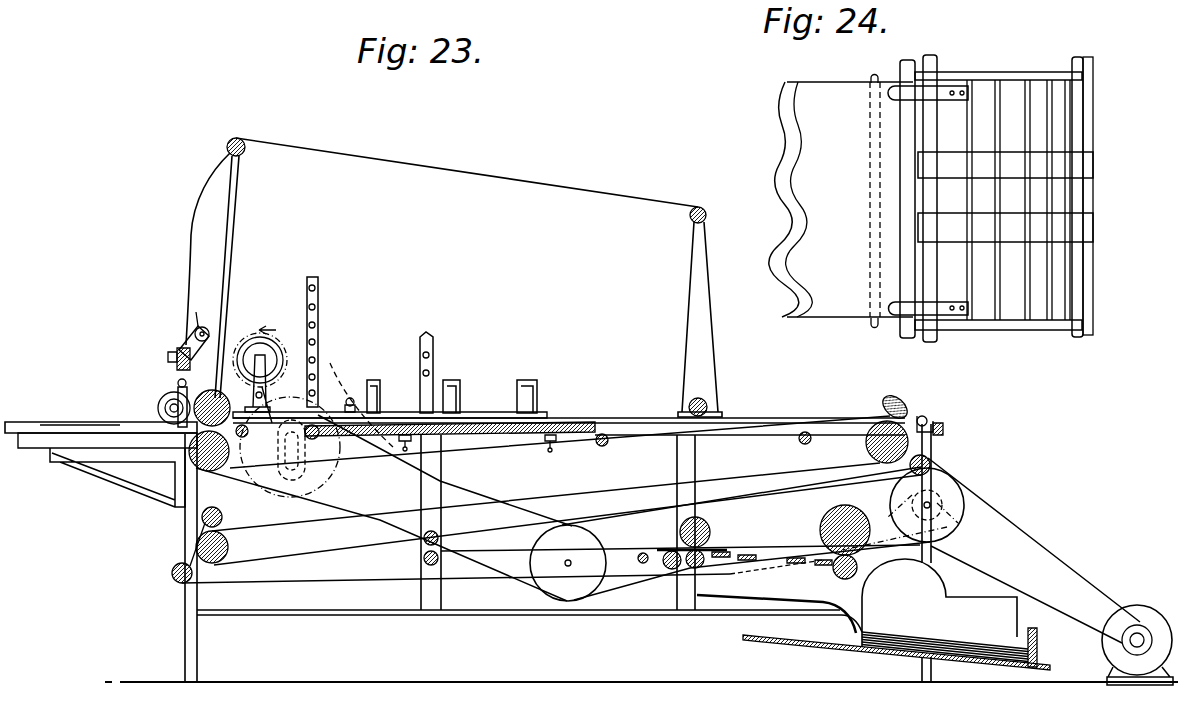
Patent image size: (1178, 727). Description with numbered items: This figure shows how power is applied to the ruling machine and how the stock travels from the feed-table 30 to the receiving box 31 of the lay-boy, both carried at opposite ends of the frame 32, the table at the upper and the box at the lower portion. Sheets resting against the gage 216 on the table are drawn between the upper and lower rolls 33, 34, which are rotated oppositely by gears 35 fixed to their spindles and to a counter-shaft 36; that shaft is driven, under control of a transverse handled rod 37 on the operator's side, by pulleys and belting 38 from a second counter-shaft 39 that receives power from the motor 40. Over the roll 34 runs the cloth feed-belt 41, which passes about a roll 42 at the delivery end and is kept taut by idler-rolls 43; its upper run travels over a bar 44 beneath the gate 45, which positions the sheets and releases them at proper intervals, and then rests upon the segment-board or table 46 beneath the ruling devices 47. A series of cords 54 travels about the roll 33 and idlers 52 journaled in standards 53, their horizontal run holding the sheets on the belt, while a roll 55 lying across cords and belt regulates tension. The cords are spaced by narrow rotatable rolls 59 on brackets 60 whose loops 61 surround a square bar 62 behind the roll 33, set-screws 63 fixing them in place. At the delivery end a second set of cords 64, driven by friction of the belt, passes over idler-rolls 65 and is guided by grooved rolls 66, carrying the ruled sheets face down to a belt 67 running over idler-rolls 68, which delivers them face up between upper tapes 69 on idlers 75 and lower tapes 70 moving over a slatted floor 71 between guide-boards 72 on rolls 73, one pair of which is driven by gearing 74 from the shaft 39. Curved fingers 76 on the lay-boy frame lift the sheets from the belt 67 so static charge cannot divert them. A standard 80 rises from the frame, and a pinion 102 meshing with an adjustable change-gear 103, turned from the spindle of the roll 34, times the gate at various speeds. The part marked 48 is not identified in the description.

In FIG. 23, the feed-table 30 is at (41, 428).
In FIG. 23, the gage 216 is at (90, 430).
In FIG. 23, the receiving box 31 is at (945, 610).
In FIG. 23, the frame 32 is at (452, 614).
In FIG. 23, the upper roll 33 is at (195, 398).
In FIG. 23, the lower roll 34 is at (207, 471).
In FIG. 23, the gears 35 is at (177, 472).
In FIG. 23, the counter-shaft 36 is at (158, 405).
In FIG. 23, the transverse handled rod 37 is at (178, 384).
In FIG. 23, the pulleys and belting 38 is at (567, 525).
In FIG. 23, the second counter-shaft 39 is at (935, 504).
In FIG. 23, the motor 40 is at (1135, 605).
In FIG. 23, the feed-belt 41 is at (413, 445).
In FIG. 24, the feed-belt 41 is at (803, 310).
In FIG. 23, the roll 42 is at (874, 428).
In FIG. 23, the idler-rolls 43 is at (246, 436).
In FIG. 23, the bar 44 is at (218, 404).
In FIG. 23, the gate 45 is at (268, 395).
In FIG. 23, the segment-board or table 46 is at (528, 442).
In FIG. 23, the ruling devices 47 is at (372, 380).
In FIG. 23, the hanger rod 48 is at (377, 456).
In FIG. 23, the idlers 52 is at (246, 153).
In FIG. 23, the standards 53 is at (222, 309).
In FIG. 23, the cords 54 is at (480, 175).
In FIG. 23, the roll 55 is at (338, 397).
In FIG. 23, the narrow rotatable rolls 59 is at (193, 300).
In FIG. 23, the brackets 60 is at (198, 322).
In FIG. 23, the loops 61 is at (178, 348).
In FIG. 23, the bar 62 is at (170, 348).
In FIG. 23, the set-screws 63 is at (174, 360).
In FIG. 23, the second set of cords 64 is at (300, 527).
In FIG. 23, the idler-rolls 65 is at (230, 548).
In FIG. 23, the grooved rolls 66 is at (930, 417).
In FIG. 23, the belt 67 is at (482, 552).
In FIG. 23, the idler-rolls 68 is at (175, 573).
In FIG. 23, the upper tapes 69 is at (786, 508).
In FIG. 23, the lower tapes 70 is at (776, 605).
In FIG. 24, the lower tapes 70 is at (1080, 160).
In FIG. 23, the slatted floor 71 is at (747, 560).
In FIG. 24, the slatted floor 71 is at (1037, 307).
In FIG. 23, the guide-boards 72 is at (800, 508).
In FIG. 24, the guide-boards 72 is at (1010, 72).
In FIG. 23, the rolls 73 is at (693, 570).
In FIG. 24, the rolls 73 is at (1093, 287).
In FIG. 23, the sprocket gearing 74 is at (940, 520).
In FIG. 23, the idlers 75 is at (703, 515).
In FIG. 23, the fingers 76 is at (666, 550).
In FIG. 24, the fingers 76 is at (896, 88).
In FIG. 23, the standard 80 is at (282, 331).
In FIG. 23, the pinion 102 is at (261, 345).
In FIG. 23, the adjustable change-gear 103 is at (335, 365).